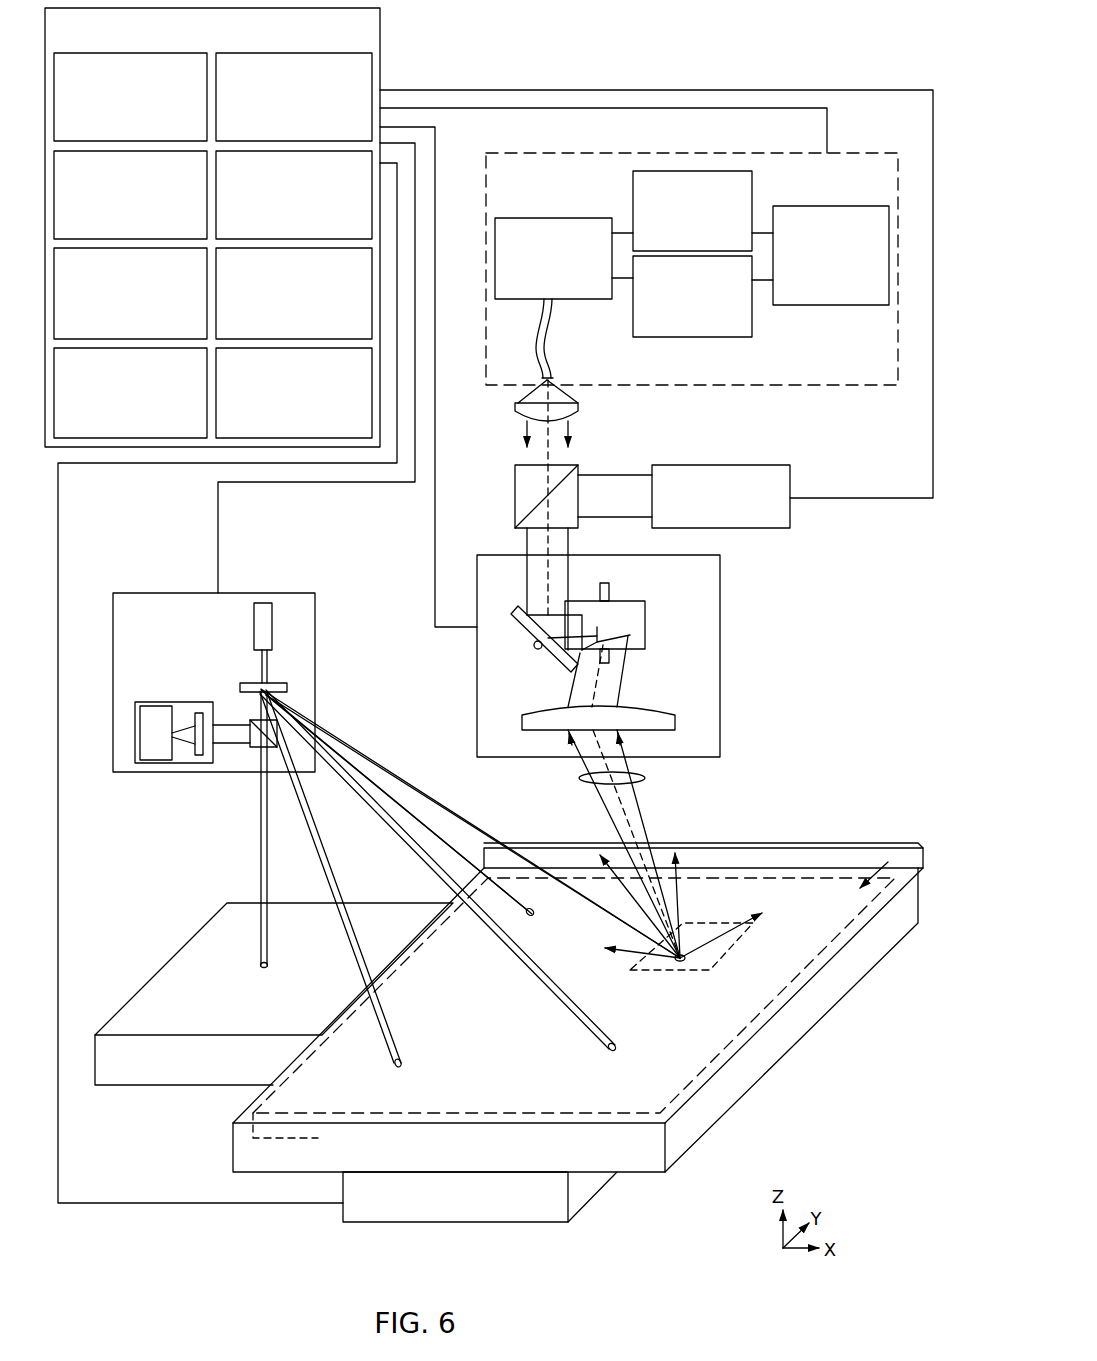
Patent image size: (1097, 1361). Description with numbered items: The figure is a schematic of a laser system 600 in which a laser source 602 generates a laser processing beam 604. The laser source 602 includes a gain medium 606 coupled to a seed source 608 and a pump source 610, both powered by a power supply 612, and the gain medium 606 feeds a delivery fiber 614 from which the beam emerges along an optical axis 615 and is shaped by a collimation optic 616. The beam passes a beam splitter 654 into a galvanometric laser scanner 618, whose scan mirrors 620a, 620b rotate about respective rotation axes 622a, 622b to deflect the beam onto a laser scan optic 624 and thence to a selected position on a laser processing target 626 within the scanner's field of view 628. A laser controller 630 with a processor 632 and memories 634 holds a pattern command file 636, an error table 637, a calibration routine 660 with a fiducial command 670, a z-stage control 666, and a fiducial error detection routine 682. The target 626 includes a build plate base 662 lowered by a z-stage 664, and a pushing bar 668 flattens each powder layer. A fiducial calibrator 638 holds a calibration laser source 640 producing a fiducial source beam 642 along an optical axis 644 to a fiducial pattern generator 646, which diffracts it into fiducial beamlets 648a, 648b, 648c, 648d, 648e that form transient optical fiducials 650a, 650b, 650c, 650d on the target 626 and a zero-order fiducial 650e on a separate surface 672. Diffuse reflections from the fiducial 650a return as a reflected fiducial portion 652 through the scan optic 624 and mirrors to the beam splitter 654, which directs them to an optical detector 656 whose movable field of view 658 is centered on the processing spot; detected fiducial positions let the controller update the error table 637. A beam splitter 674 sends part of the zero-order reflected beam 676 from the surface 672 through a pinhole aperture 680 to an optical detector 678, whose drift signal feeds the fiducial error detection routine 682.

The laser system 600 is at (778, 44).
The laser controller 630 is at (212, 227).
The processor 632 is at (130, 97).
The memories 634 is at (294, 97).
The error table 637 is at (130, 195).
The pattern command file 636 is at (294, 195).
The fiducial command 670 is at (130, 293).
The calibration routine 660 is at (294, 293).
The z-stage control 666 is at (130, 393).
The fiducial error detection routine 682 is at (294, 393).
The laser source 602 is at (812, 374).
The gain medium 606 is at (553, 258).
The seed source 608 is at (692, 211).
The pump source 610 is at (692, 296).
The power supply 612 is at (831, 255).
The delivery fiber 614 is at (547, 337).
The laser processing beam 604 is at (580, 425).
The collimation optic 616 is at (515, 408).
The optical axis 615 is at (552, 457).
The beam splitter 654 is at (515, 492).
The optical detector 656 is at (721, 496).
The galvanometric laser scanner 618 is at (722, 668).
The galvanometer scan mirror 620a is at (523, 630).
The scan mirror rotation axis 622a is at (538, 650).
The galvanometer scan mirror 620b is at (645, 625).
The scan mirror rotation axis 622b is at (612, 592).
The laser scan optic 624 is at (675, 725).
The reflected fiducial portion 652 is at (645, 778).
The fiducial calibrator 638 is at (242, 725).
The calibration laser source 640 is at (272, 627).
The fiducial source beam 642 is at (268, 660).
The optical axis 644 is at (287, 688).
The fiducial pattern generator 646 is at (275, 695).
The optical detector 678 is at (135, 725).
The pinhole aperture 680 is at (197, 734).
The reflected beam 676 is at (240, 735).
The beam splitter 674 is at (273, 700).
The fiducial beamlet 648a is at (462, 812).
The fiducial beamlet 648b is at (377, 790).
The fiducial beamlet 648c is at (420, 851).
The fiducial beamlet 648d is at (347, 942).
The fiducial beamlet 648e is at (258, 873).
The optical fiducial 650a is at (683, 965).
The optical fiducial 650b is at (535, 918).
The optical fiducial 650c is at (613, 1052).
The optical fiducial 650d is at (412, 1068).
The optical fiducial 650e is at (266, 970).
The field of view 658 is at (735, 943).
The pushing bar 668 is at (813, 842).
The laser processing target 626 is at (740, 990).
The field of view 628 is at (850, 930).
The build plate base 662 is at (258, 1140).
The separate surface 672 is at (178, 985).
The z-stage 664 is at (480, 1197).